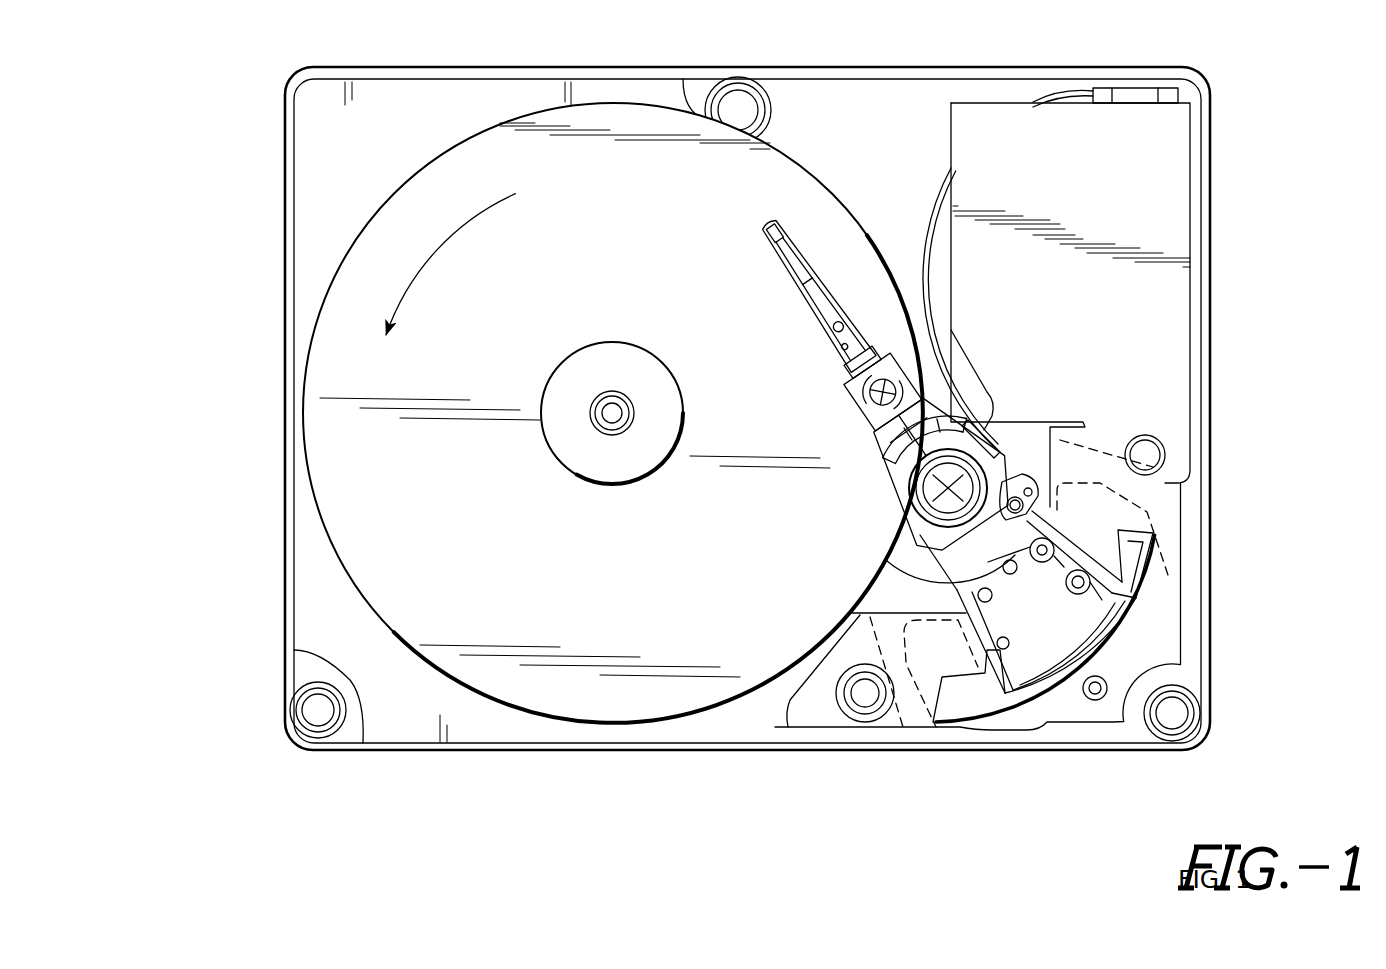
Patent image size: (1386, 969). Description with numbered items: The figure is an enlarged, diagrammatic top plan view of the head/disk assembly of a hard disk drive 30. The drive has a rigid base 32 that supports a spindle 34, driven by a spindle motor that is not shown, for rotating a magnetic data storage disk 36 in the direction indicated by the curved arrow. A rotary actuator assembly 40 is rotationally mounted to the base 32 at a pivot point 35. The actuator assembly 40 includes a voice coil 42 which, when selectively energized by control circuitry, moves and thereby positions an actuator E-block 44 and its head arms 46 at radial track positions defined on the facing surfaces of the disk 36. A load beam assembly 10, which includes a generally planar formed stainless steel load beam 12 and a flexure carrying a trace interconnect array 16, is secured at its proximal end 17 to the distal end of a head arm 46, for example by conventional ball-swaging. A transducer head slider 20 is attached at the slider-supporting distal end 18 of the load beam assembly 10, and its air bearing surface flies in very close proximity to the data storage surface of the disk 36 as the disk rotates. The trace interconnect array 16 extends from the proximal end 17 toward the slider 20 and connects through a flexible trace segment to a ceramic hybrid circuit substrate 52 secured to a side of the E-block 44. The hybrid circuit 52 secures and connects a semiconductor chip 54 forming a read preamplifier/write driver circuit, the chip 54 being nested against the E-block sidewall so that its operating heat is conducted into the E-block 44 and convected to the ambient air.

The load beam assembly 10 is at (811, 319).
The load beam 12 is at (878, 385).
The trace interconnect array 16 is at (815, 293).
The proximal end 17 is at (905, 358).
The distal end 18 is at (811, 286).
The transducer head slider 20 is at (774, 233).
The hard disk drive 30 is at (338, 824).
The base 32 is at (446, 752).
The spindle 34 is at (622, 472).
The pivot point 35 is at (922, 500).
The magnetic data storage disk 36 is at (343, 377).
The rotary actuator assembly 40 is at (1029, 526).
The voice coil 42 is at (1138, 592).
The actuator E-block 44 is at (903, 478).
The head arm 46 is at (890, 447).
The ceramic hybrid circuit substrate 52 is at (990, 412).
The semiconductor chip 54 is at (1004, 447).